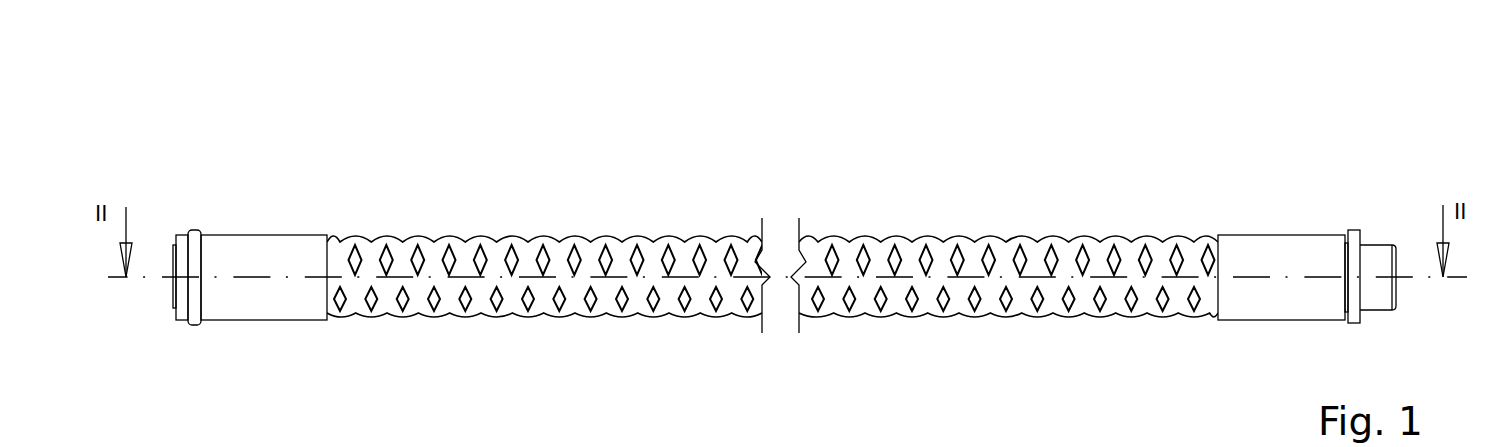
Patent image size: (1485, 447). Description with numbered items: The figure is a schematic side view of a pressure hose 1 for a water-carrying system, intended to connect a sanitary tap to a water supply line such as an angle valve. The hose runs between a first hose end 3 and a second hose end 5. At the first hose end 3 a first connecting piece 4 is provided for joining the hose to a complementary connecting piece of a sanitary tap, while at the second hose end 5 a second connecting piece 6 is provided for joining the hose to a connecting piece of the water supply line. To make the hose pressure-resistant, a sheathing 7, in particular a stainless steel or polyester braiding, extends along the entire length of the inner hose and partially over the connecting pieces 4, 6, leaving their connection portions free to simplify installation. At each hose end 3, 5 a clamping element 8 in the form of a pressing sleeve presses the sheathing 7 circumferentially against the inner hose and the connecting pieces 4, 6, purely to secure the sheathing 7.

The pressure hose 1 is at (496, 122).
The first hose end 3 is at (1408, 155).
The first connecting piece 4 is at (1367, 202).
The second hose end 5 is at (150, 164).
The second connecting piece 6 is at (191, 200).
The sheathing 7 is at (935, 246).
The clamping element 8 is at (258, 252).